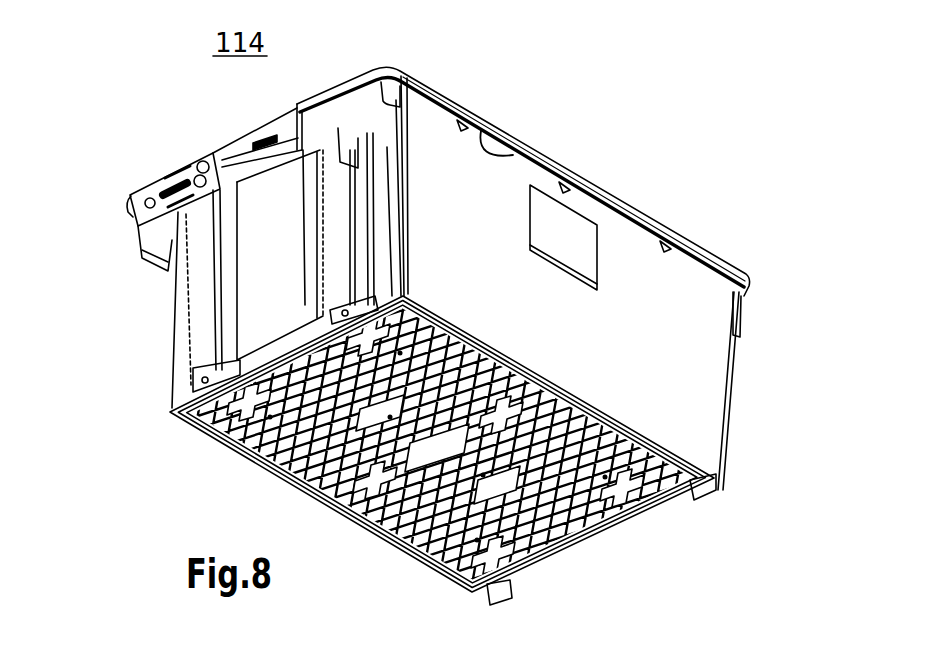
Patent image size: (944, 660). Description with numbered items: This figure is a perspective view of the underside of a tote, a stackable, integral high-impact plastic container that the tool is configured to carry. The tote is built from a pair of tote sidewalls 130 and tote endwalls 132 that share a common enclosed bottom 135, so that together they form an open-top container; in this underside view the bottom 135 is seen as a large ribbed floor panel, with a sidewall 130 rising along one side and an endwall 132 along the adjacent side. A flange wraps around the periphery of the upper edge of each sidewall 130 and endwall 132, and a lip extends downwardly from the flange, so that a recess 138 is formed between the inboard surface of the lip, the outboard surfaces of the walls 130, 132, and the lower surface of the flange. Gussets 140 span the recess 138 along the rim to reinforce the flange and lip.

The tote sidewall 130 is at (682, 358).
The tote endwall 132 is at (205, 292).
The common enclosed bottom 135 is at (420, 500).
The recess 138 is at (513, 153).
The gusset 140 is at (537, 155).